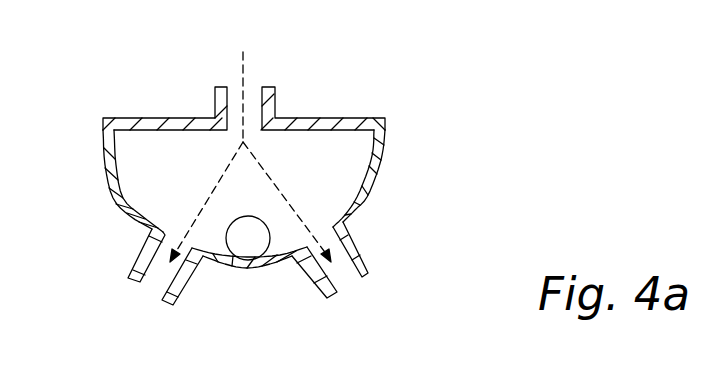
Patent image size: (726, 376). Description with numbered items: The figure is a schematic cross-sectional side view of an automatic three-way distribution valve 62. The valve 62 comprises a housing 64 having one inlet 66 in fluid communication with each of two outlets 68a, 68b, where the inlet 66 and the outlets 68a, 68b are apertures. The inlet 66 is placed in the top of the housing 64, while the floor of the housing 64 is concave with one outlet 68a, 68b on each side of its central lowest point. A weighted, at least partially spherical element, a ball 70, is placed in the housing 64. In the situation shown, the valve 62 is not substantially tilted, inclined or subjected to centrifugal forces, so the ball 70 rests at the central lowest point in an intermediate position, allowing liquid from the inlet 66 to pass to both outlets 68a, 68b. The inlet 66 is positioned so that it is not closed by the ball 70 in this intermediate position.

The automatic three-way distribution valve 62 is at (234, 177).
The housing 64 is at (378, 177).
The inlet 66 is at (252, 110).
The outlet 68a is at (160, 273).
The outlet 68b is at (343, 277).
The ball 70 is at (255, 240).